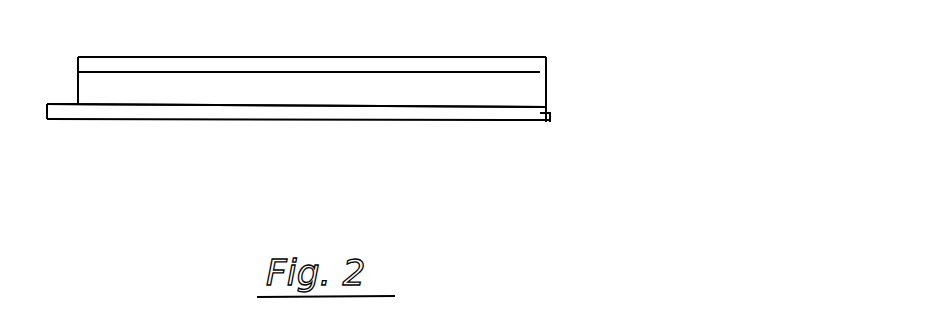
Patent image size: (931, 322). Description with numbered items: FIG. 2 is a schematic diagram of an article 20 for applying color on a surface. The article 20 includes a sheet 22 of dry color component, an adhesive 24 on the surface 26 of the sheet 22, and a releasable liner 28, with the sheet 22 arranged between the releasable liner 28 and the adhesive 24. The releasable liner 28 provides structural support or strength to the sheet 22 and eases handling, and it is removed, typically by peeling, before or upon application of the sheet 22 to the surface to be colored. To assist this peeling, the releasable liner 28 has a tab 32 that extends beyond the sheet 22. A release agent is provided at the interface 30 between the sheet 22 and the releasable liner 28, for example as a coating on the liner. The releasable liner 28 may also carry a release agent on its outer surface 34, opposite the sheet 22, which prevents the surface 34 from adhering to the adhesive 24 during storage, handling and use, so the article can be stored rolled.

The article 20 is at (668, 76).
The sheet of dry color component 22 is at (533, 88).
The adhesive 24 is at (523, 64).
The surface of the sheet of dry color component 26 is at (360, 72).
The releasable liner 28 is at (523, 113).
The interface 30 is at (412, 107).
The tab 32 is at (60, 110).
The outer surface of the releasable liner 34 is at (470, 120).